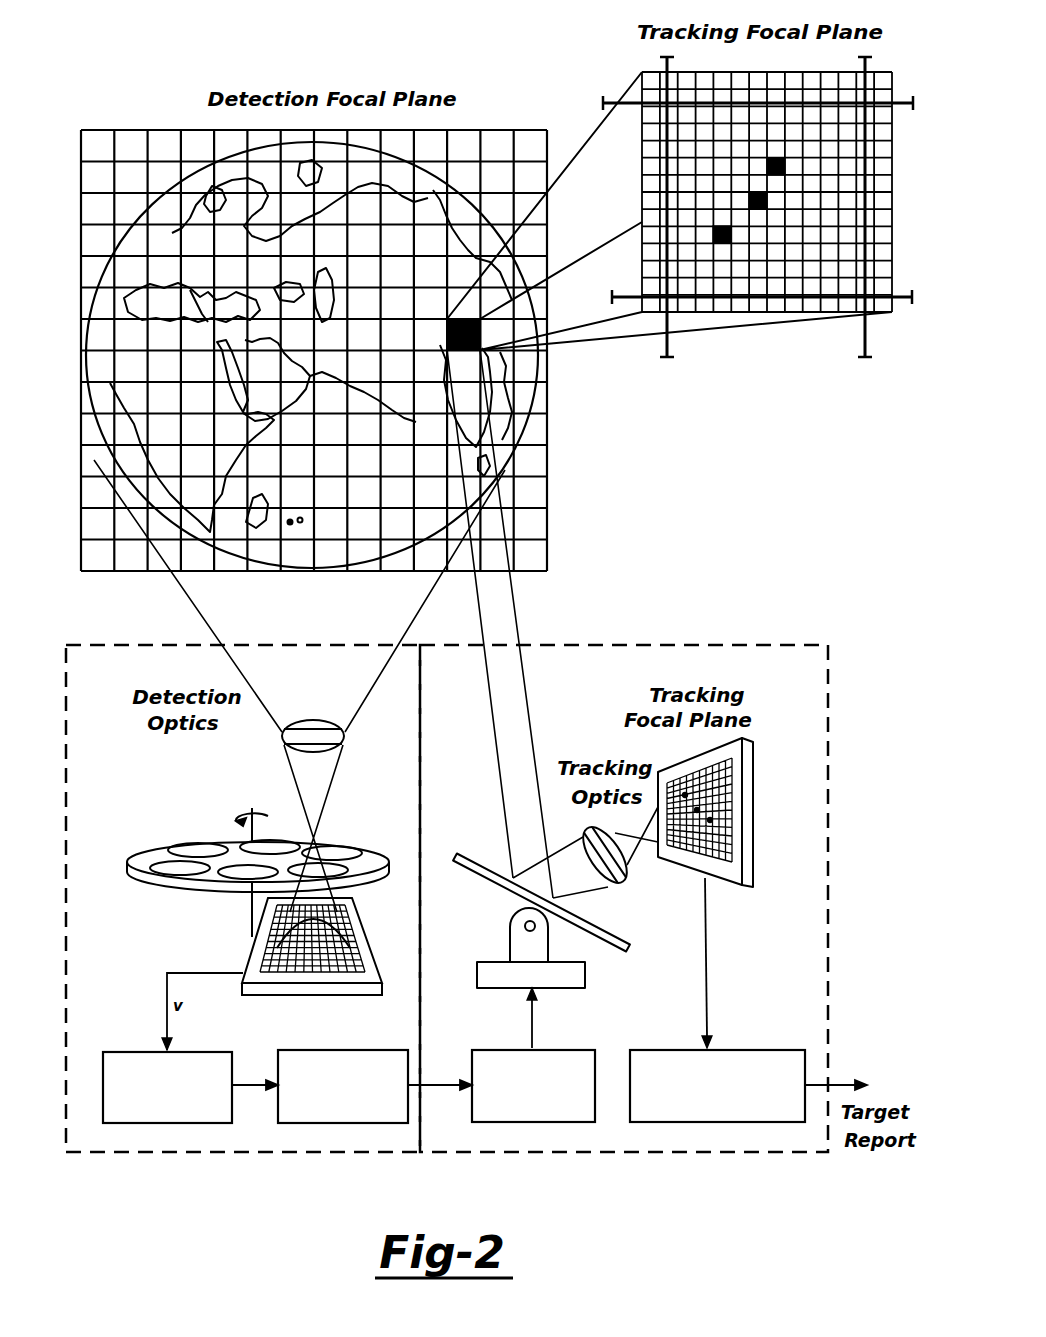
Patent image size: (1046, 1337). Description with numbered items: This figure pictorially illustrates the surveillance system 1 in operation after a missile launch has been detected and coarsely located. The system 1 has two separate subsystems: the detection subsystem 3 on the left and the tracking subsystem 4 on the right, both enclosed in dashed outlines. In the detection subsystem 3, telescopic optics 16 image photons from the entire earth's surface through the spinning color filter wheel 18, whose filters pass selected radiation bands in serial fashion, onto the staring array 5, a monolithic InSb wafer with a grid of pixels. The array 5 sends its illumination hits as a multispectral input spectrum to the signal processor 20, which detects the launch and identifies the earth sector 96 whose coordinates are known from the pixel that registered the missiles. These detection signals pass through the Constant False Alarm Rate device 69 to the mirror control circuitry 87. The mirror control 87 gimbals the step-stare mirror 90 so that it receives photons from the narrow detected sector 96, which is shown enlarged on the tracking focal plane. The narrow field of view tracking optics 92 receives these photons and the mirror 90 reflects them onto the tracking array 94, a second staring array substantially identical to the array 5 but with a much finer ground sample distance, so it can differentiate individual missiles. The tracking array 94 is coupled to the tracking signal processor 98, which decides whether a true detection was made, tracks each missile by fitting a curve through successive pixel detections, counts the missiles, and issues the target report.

The surveillance system 1 is at (458, 828).
The detection subsystem 3 is at (92, 644).
The tracking subsystem 4 is at (763, 645).
The staring array 5 is at (370, 974).
The telescopic optics 16 is at (318, 722).
The color filter wheel 18 is at (150, 856).
The signal processor 20 is at (130, 1050).
The Constant False Alarm Rate device 69 is at (282, 1117).
The mirror control circuitry 87 is at (592, 1105).
The step-stare mirror 90 is at (497, 990).
The tracking optics 92 is at (617, 880).
The tracking array 94 is at (740, 842).
The detected sector 96 is at (480, 313).
The tracking signal processor 98 is at (790, 1058).